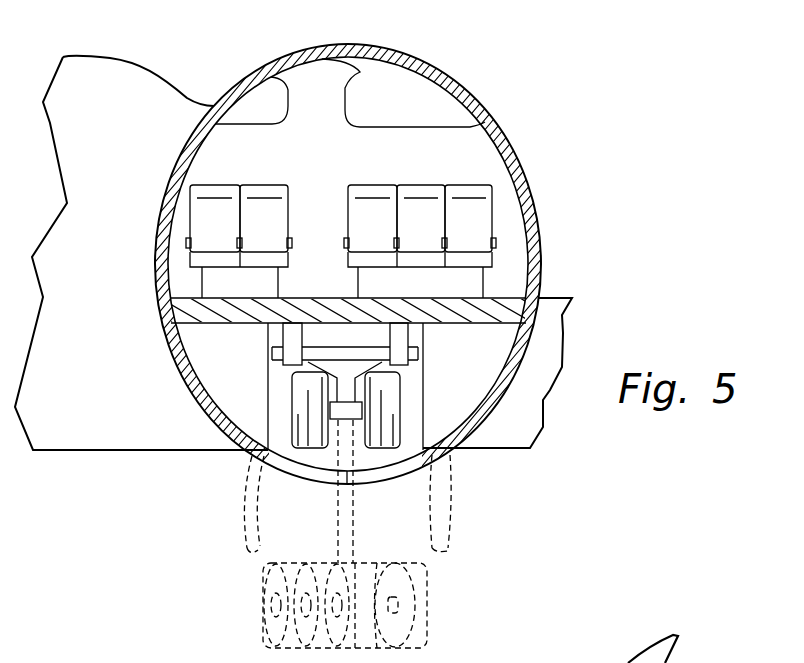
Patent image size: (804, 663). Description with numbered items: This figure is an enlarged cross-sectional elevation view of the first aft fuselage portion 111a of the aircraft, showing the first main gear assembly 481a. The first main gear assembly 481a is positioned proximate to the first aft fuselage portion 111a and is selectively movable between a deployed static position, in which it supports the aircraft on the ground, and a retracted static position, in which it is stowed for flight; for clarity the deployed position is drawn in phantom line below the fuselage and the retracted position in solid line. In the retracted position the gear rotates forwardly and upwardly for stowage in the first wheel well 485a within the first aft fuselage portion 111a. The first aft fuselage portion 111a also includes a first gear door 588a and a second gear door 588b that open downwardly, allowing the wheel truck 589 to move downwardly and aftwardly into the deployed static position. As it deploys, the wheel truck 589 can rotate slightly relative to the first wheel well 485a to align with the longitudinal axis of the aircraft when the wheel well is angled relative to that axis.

The first aft fuselage portion 111a is at (428, 71).
The first main gear assembly 481a is at (400, 415).
The first wheel well 485a is at (283, 410).
The first gear door 588a is at (448, 551).
The second gear door 588b is at (250, 556).
The wheel truck 589 is at (403, 617).